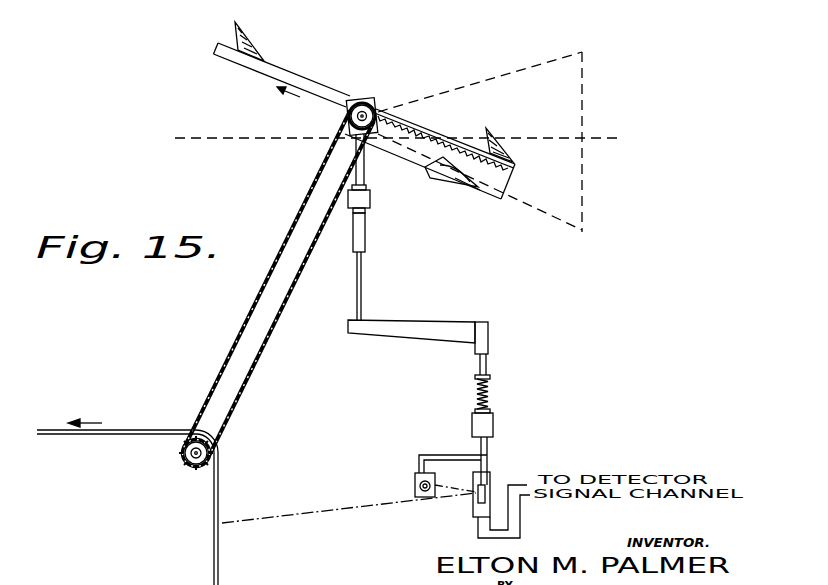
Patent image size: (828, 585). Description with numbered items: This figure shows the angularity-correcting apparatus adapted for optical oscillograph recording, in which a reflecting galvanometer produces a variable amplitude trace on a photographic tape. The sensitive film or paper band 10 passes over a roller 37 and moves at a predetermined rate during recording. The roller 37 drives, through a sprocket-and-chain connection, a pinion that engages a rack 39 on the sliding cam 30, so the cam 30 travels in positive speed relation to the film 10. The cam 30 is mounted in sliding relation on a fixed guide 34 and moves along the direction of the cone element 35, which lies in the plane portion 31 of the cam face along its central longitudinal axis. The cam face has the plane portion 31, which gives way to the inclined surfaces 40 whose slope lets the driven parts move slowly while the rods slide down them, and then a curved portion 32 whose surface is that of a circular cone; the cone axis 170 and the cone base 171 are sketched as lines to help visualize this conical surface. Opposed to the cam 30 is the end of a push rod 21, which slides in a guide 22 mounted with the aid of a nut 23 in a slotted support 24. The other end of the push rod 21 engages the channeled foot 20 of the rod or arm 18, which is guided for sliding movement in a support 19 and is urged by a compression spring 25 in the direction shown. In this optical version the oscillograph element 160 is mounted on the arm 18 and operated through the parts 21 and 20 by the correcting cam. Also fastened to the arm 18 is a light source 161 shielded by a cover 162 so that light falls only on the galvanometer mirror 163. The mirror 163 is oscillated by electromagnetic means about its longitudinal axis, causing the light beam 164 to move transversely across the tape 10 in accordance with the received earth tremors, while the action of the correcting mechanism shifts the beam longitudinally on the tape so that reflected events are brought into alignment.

The film or paper band 10 is at (215, 493).
The rod 18 is at (488, 443).
The support 19 is at (488, 418).
The channeled foot 20 is at (410, 332).
The push rod 21 is at (362, 272).
The guide 22 is at (366, 237).
The nut 23 is at (366, 211).
The slotted support 24 is at (370, 192).
The spring 25 is at (492, 387).
The cam 30 is at (509, 181).
The plane portion 31 is at (345, 126).
The curved portion 32 is at (477, 191).
The fixed guide 34 is at (228, 56).
The cone element 35 is at (537, 217).
The roller 37 is at (181, 462).
The rack 39 is at (445, 140).
The inclined surface 40 is at (438, 171).
The oscillograph element 160 is at (490, 472).
The light source 161 is at (421, 476).
The cover 162 is at (413, 490).
The galvanometer mirror 163 is at (474, 497).
The light beam 164 is at (243, 521).
The cone axis 170 is at (262, 138).
The cone base 171 is at (586, 78).